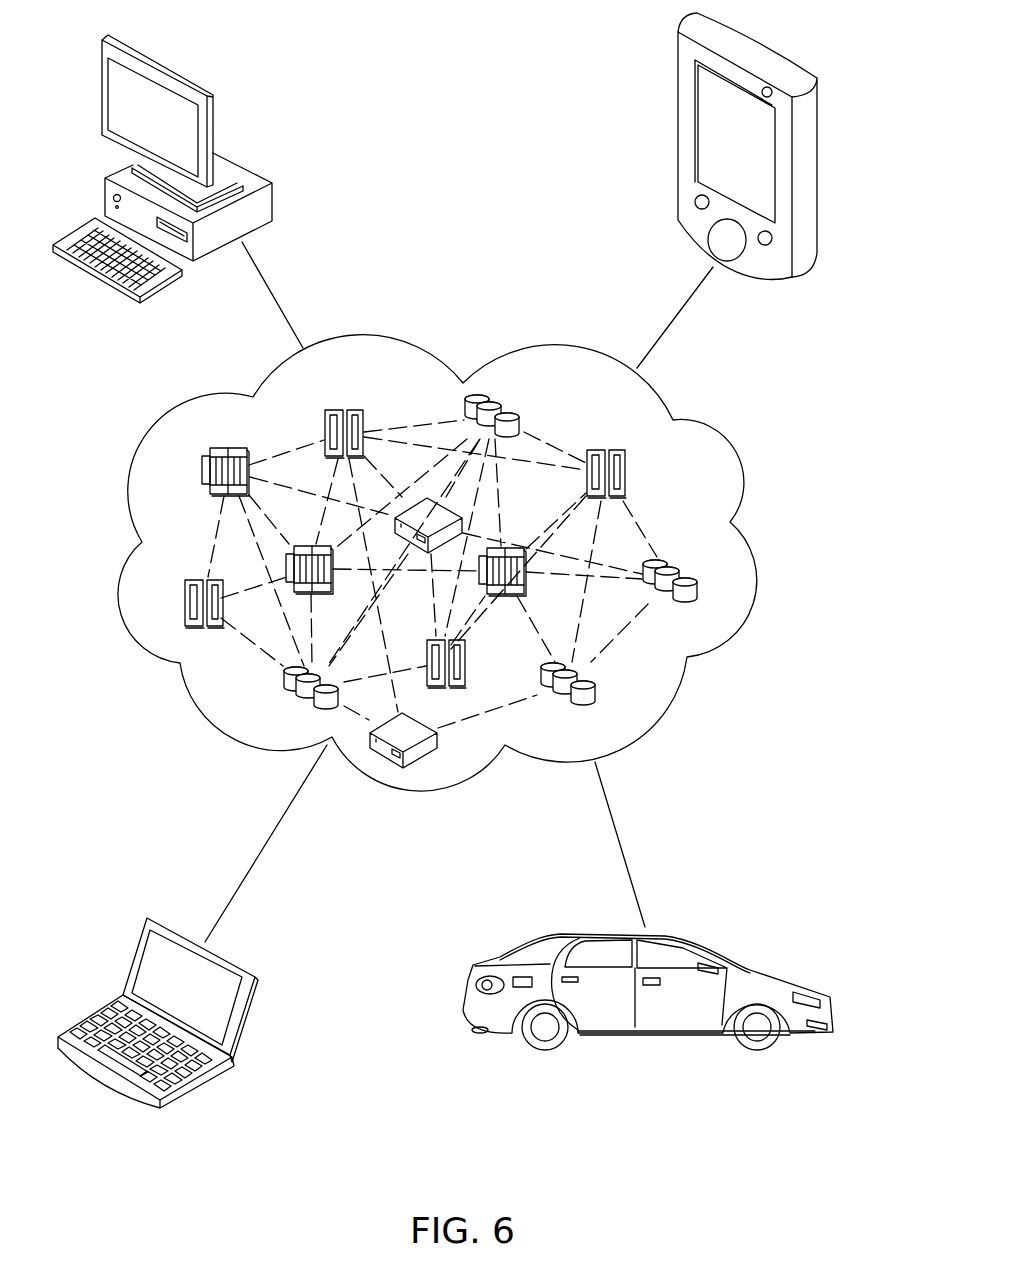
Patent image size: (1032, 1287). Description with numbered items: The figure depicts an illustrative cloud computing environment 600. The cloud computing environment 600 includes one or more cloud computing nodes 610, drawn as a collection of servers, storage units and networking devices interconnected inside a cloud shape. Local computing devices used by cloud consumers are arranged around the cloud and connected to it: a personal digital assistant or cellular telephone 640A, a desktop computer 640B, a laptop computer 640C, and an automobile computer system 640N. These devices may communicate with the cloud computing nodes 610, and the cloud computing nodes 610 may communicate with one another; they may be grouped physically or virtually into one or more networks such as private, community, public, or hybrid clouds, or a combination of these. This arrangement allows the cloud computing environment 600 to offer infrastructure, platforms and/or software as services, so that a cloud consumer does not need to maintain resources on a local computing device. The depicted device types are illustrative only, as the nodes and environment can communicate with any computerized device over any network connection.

The cloud computing environment 600 is at (730, 640).
The cloud computing nodes 610 is at (673, 497).
The personal digital assistant (PDA) or cellular telephone 640A is at (678, 93).
The desktop computer 640B is at (273, 197).
The laptop computer 640C is at (257, 987).
The automobile computer system 640N is at (827, 993).